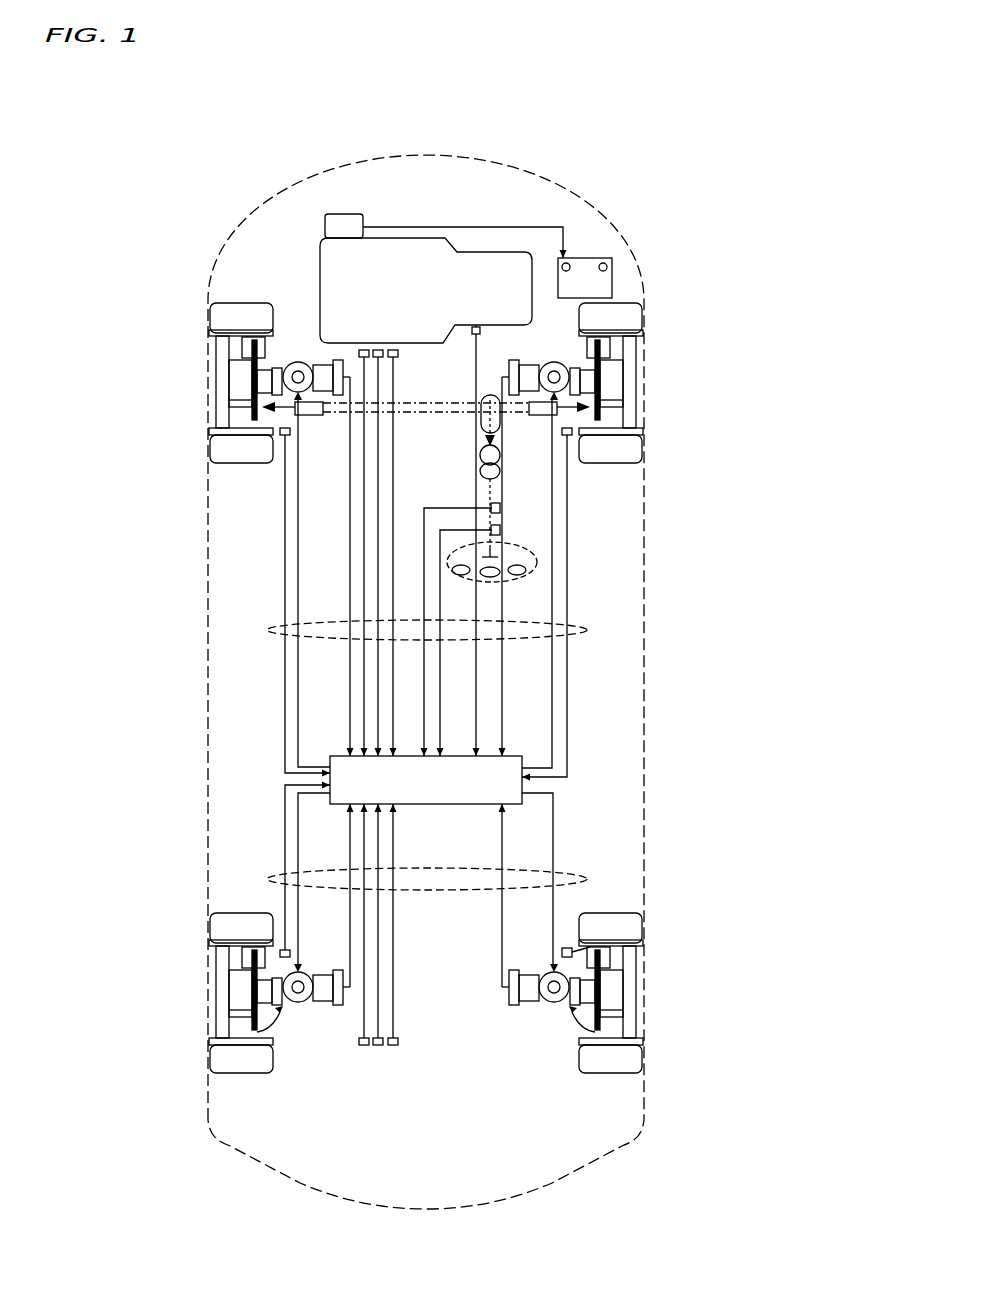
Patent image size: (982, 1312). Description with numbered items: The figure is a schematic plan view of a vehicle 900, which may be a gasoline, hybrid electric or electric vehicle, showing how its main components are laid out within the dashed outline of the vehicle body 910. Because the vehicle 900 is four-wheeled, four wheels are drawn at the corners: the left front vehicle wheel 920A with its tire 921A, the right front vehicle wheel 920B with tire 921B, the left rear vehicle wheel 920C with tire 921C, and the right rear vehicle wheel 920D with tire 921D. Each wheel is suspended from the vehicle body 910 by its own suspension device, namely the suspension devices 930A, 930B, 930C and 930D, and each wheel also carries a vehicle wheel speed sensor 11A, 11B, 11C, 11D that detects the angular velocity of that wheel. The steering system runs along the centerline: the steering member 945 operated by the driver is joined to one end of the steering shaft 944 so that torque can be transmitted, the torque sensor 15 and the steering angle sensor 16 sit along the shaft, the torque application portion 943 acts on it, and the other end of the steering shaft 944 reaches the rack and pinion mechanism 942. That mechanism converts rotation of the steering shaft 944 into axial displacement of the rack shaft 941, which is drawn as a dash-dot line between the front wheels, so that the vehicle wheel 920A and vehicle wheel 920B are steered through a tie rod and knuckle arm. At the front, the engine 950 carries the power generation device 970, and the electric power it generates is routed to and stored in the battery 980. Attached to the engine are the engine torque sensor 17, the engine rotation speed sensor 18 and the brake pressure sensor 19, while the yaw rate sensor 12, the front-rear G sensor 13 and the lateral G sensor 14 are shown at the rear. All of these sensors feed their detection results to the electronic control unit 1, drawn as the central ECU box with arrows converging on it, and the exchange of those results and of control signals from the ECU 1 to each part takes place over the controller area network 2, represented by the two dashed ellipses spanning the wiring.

The electronic control unit 1 is at (421, 805).
The controller area network 2 is at (585, 878).
The vehicle wheel speed sensor 11A is at (269, 437).
The vehicle wheel speed sensor 11B is at (583, 437).
The vehicle wheel speed sensor 11C is at (239, 940).
The vehicle wheel speed sensor 11D is at (613, 940).
The yaw rate sensor 12 is at (364, 1046).
The front-rear G sensor 13 is at (378, 1046).
The lateral G sensor 14 is at (393, 1046).
The torque sensor 15 is at (500, 530).
The steering angle sensor 16 is at (500, 508).
The engine torque sensor 17 is at (364, 351).
The engine rotation speed sensor 18 is at (379, 351).
The brake pressure sensor 19 is at (394, 351).
The vehicle 900 is at (461, 637).
The vehicle body 910 is at (622, 230).
The vehicle wheel 920A is at (214, 348).
The vehicle wheel 920B is at (638, 348).
The vehicle wheel 920C is at (215, 955).
The vehicle wheel 920D is at (637, 955).
The tire 921A is at (222, 455).
The tire 921B is at (630, 455).
The tire 921C is at (222, 1062).
The tire 921D is at (630, 1062).
The suspension device 930A is at (209, 427).
The suspension device 930B is at (643, 427).
The suspension device 930C is at (209, 1033).
The suspension device 930D is at (643, 1033).
The rack shaft 941 is at (413, 403).
The rack and pinion mechanism 942 is at (480, 420).
The torque application portion 943 is at (500, 460).
The steering shaft 944 is at (540, 541).
The steering member 945 is at (540, 568).
The engine 950 is at (325, 285).
The power generation device 970 is at (357, 214).
The battery 980 is at (610, 283).